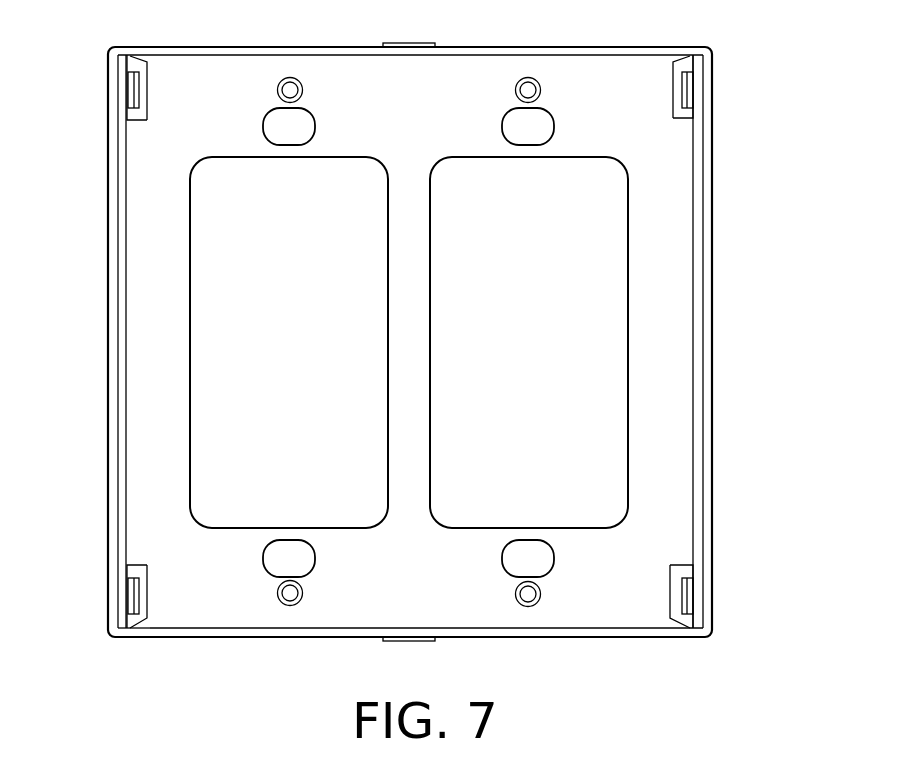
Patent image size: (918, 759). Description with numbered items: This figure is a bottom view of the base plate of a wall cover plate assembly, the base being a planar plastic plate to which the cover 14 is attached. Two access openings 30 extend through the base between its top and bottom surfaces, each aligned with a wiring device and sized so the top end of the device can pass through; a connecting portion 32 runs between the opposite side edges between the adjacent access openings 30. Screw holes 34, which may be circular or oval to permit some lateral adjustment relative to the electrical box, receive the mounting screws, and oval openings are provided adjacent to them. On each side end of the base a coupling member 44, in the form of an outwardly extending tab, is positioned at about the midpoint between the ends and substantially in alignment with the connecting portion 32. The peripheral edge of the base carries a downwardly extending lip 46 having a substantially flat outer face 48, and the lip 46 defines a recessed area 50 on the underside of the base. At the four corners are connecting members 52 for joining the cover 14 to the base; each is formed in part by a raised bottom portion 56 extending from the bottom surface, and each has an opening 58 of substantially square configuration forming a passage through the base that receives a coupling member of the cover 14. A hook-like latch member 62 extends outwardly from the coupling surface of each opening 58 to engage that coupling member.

The cover 14 is at (728, 345).
The access openings 30 is at (627, 336).
The connecting portion 32 is at (414, 362).
The screw holes 34 is at (291, 77).
The coupling member 44 is at (433, 43).
The lip 46 is at (203, 620).
The outer face 48 is at (248, 633).
The recessed area 50 is at (141, 472).
The connecting members 52 is at (135, 140).
The raised bottom portion 56 is at (143, 92).
The opening 58 is at (132, 98).
The latch member 62 is at (132, 80).